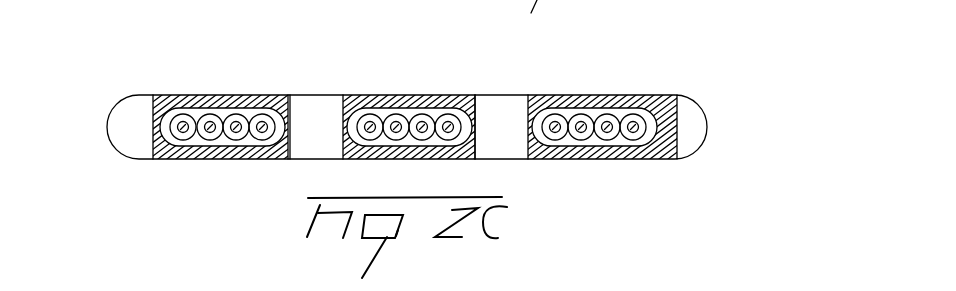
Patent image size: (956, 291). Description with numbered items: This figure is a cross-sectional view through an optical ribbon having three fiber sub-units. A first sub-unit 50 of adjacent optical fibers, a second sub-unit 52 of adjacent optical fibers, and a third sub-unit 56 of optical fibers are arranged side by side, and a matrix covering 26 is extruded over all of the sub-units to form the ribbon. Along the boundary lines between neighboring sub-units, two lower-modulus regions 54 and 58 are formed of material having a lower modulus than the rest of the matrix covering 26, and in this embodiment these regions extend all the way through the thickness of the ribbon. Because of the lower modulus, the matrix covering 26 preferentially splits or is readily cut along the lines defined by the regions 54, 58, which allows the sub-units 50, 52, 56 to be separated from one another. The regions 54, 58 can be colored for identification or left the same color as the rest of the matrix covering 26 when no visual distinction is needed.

The matrix covering 26 is at (675, 143).
The first sub-unit 50 is at (183, 98).
The second sub-unit 52 is at (412, 98).
The lower-modulus region 54 is at (310, 112).
The third sub-unit 56 is at (600, 98).
The lower-modulus region 58 is at (500, 113).